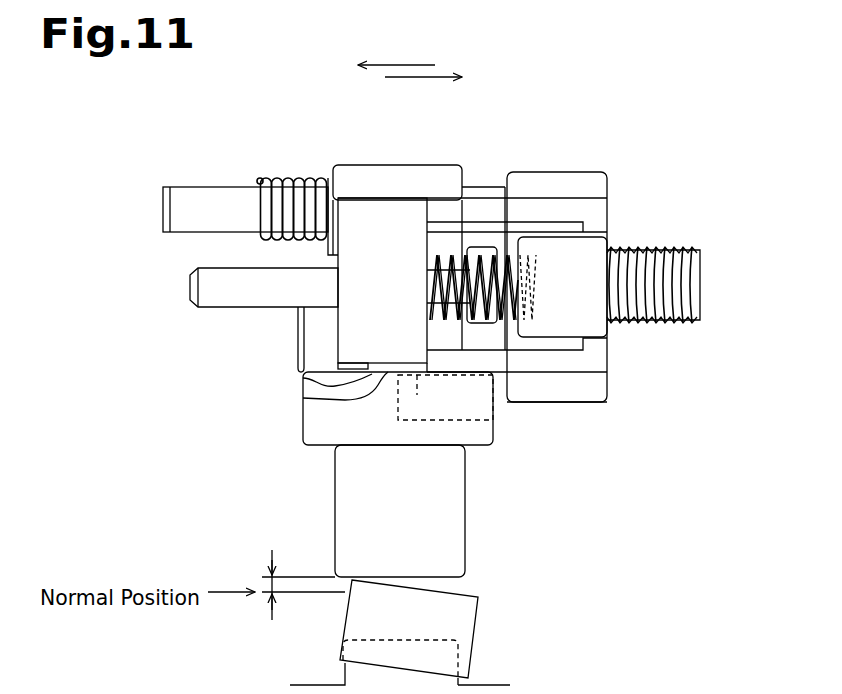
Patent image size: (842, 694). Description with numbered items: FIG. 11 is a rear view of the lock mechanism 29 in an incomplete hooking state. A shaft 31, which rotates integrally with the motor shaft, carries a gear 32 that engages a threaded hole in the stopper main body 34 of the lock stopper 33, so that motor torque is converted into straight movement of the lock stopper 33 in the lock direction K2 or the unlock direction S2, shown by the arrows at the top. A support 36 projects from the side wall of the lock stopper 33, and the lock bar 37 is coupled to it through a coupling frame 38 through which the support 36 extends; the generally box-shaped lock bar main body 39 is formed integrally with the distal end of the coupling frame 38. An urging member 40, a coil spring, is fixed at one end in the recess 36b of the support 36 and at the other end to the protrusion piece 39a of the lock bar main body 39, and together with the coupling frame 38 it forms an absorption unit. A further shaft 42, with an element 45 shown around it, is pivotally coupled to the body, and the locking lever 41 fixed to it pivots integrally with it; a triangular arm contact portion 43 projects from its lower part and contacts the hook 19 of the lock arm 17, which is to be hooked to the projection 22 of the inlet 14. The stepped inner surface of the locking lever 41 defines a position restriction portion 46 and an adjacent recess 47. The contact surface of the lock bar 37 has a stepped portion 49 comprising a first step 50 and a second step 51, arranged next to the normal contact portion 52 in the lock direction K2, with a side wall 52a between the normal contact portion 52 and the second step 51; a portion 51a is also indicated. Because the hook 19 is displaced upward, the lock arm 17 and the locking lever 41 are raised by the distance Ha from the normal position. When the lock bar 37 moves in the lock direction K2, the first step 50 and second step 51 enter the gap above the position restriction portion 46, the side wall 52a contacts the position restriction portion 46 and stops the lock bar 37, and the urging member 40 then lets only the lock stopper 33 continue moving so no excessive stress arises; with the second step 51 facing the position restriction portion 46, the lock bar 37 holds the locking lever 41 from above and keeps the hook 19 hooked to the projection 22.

The lock mechanism 29 is at (118, 152).
The shaft 42 is at (206, 186).
The coil spring 45 is at (288, 178).
The shaft 31 is at (190, 288).
The lock bar main body 39 is at (358, 196).
The protrusion piece 39a is at (443, 282).
The lock bar 37 is at (500, 173).
The stopper main body 34 is at (548, 172).
The lock stopper 33 is at (614, 148).
The support 36 is at (568, 325).
The recess 36b is at (536, 300).
The coupling frame 38 is at (596, 368).
The urging member 40 is at (440, 256).
The gear 32 is at (650, 247).
The locking lever 41 is at (303, 425).
The stepped portion 49 is at (240, 364).
The first step 50 is at (303, 378).
The second step 51 is at (303, 399).
The engaging foot 51a is at (360, 362).
The normal contact portion 52 is at (416, 393).
The side wall 52a is at (393, 370).
The position restriction portion 46 is at (315, 370).
The recess 47 is at (440, 412).
The arm contact portion 43 is at (466, 508).
The lock arm 17 is at (478, 610).
The hook 19 is at (476, 646).
The projection 22 is at (372, 638).
The inlet 14 is at (540, 688).
The lock direction K2 is at (408, 63).
The unlock direction S2 is at (423, 80).
The distance Ha is at (270, 590).